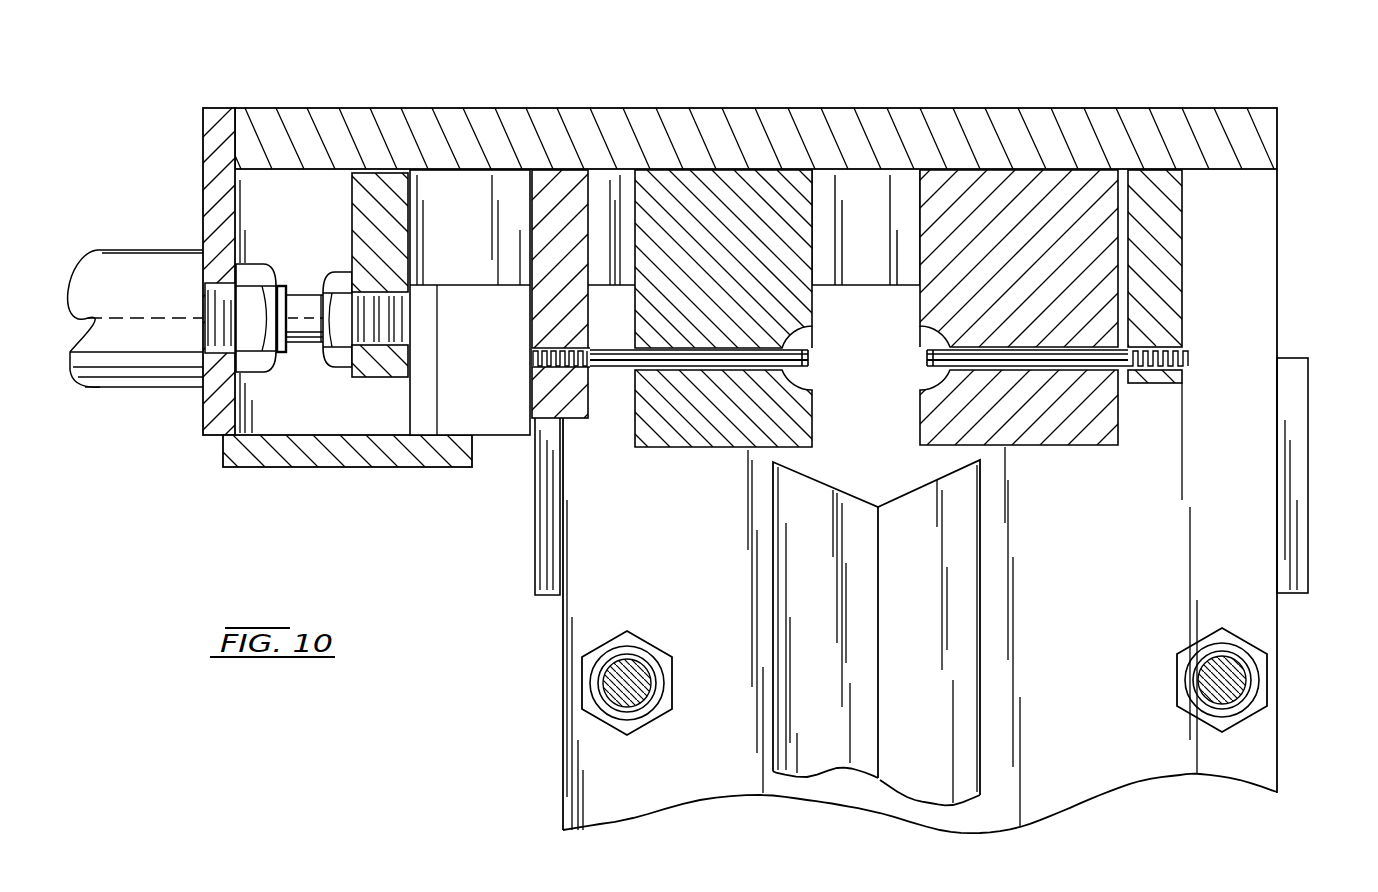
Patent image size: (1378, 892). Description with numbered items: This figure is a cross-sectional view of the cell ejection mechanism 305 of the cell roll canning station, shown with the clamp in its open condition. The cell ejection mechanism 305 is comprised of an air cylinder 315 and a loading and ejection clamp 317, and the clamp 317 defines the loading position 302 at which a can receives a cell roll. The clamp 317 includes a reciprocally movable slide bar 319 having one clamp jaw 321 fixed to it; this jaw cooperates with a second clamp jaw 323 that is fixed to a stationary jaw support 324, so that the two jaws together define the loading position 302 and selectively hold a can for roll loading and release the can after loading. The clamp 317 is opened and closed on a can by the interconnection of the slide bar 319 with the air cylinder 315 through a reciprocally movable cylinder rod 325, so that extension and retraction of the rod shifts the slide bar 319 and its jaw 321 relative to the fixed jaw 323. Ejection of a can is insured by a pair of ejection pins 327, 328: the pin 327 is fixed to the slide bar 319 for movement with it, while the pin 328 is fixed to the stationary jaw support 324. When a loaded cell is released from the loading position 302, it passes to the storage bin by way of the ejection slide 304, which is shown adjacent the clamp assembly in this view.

The loading and ejection clamp 317 is at (675, 250).
The stationary jaw support 324 is at (1268, 142).
The cell ejection mechanism 305 is at (185, 234).
The air cylinder 315 is at (150, 373).
The cylinder rod 325 is at (297, 349).
The slide bar 319 is at (470, 270).
The clamp jaw 321 is at (698, 440).
The second clamp jaw 323 is at (1080, 445).
The loading position 302 is at (888, 373).
The ejection pin 328 is at (810, 364).
The ejection pin 327 is at (925, 358).
The ejection slide 304 is at (968, 607).